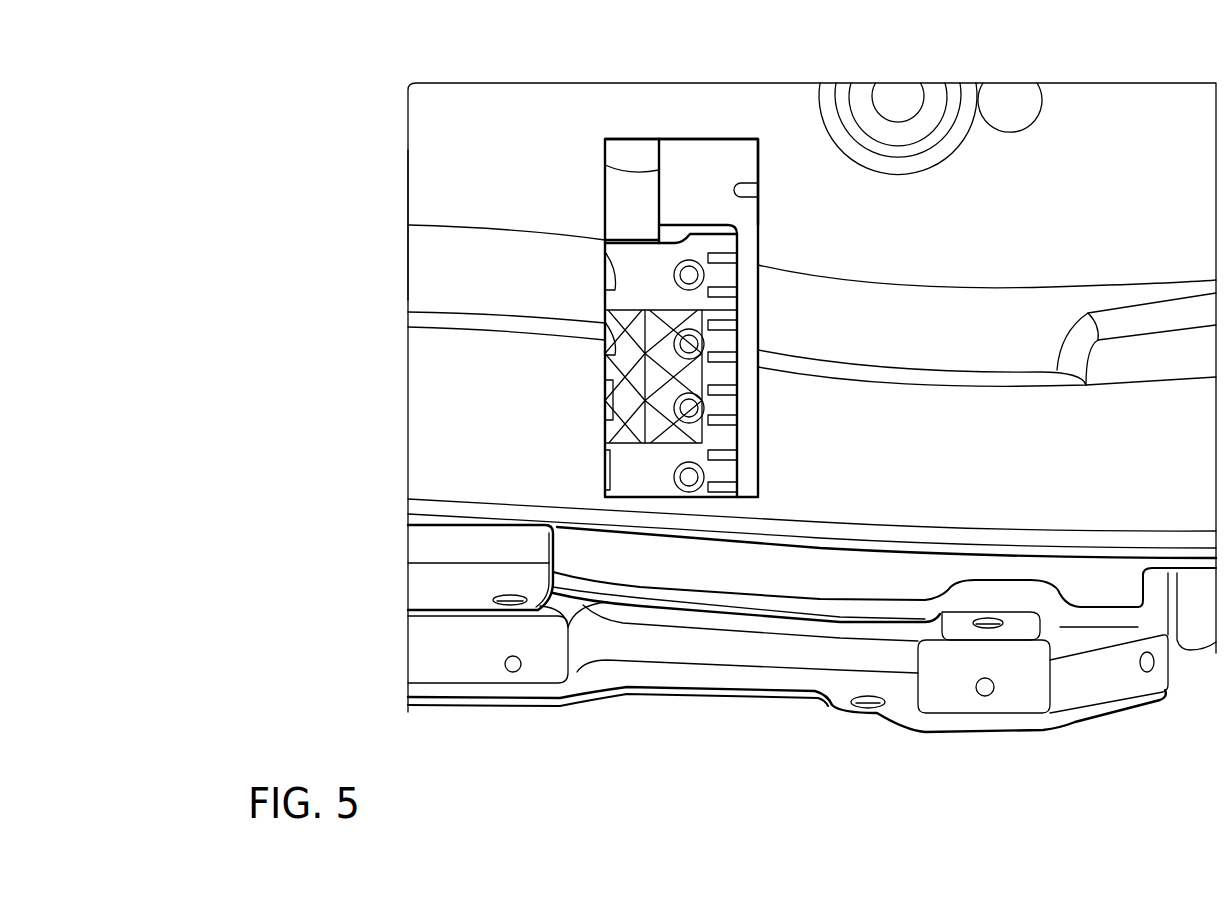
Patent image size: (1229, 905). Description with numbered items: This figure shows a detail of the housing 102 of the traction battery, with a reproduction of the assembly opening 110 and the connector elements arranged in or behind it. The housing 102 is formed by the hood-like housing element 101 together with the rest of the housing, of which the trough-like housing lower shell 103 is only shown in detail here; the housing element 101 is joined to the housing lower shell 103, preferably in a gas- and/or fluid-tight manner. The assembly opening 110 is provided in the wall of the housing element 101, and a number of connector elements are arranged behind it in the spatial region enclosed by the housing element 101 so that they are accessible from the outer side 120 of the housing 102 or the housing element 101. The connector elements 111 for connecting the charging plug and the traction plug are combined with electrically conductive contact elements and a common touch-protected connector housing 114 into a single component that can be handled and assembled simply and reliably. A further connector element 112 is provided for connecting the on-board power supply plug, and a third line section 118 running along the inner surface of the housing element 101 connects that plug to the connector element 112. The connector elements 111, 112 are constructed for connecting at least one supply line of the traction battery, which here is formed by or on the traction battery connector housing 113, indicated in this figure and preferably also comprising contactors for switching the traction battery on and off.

The housing element 101 is at (430, 386).
The housing 102 is at (376, 232).
The housing lower shell 103 is at (423, 587).
The assembly opening 110 is at (619, 205).
The connector elements 111 is at (727, 420).
The connector element 112 is at (678, 120).
The traction battery connector housing 113 is at (741, 165).
The touch-protected connector housing 114 is at (645, 428).
The third line section 118 is at (626, 148).
The outer side 120 is at (1136, 165).